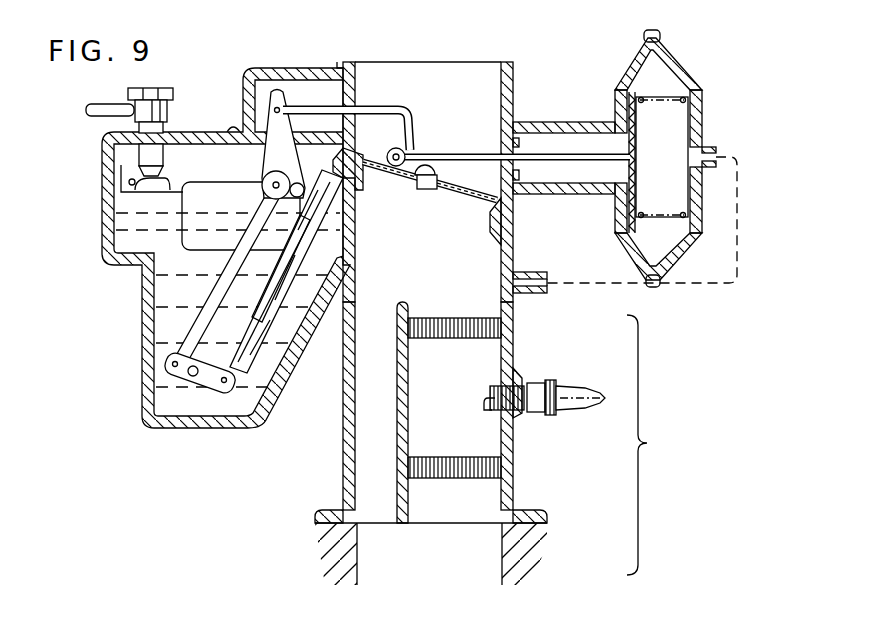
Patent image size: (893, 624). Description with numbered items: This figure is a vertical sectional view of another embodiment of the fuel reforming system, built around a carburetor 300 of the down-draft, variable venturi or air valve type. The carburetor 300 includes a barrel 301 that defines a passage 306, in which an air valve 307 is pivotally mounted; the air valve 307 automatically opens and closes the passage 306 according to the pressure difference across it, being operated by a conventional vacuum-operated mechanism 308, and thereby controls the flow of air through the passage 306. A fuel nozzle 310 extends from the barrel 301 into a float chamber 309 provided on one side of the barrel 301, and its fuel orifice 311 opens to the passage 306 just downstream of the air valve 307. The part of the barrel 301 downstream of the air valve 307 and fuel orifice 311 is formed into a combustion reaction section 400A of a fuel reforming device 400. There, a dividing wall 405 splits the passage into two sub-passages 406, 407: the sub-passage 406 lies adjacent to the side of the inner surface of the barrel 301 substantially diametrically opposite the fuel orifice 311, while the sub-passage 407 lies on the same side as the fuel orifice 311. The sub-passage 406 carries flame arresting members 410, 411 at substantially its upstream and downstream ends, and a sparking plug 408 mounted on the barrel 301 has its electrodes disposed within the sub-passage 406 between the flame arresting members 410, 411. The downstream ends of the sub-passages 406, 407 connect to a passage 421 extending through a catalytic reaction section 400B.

The carburetor 300 is at (487, 37).
The barrel 301 is at (515, 77).
The passage 306 is at (386, 78).
The air valve 307 is at (458, 190).
The vacuum-operated mechanism 308 is at (540, 156).
The float chamber 309 is at (170, 297).
The fuel nozzle 310 is at (312, 326).
The fuel orifice 311 is at (362, 178).
The fuel reforming device 400 is at (665, 445).
The combustion reaction section 400A is at (526, 478).
The catalytic reaction section 400B is at (577, 557).
The dividing wall 405 is at (400, 409).
The sub-passage 406 is at (485, 360).
The sub-passage 407 is at (352, 398).
The sparking plug 408 is at (528, 413).
The flame arresting member 410 is at (455, 318).
The flame arresting member 411 is at (444, 475).
The passage 421 is at (450, 562).